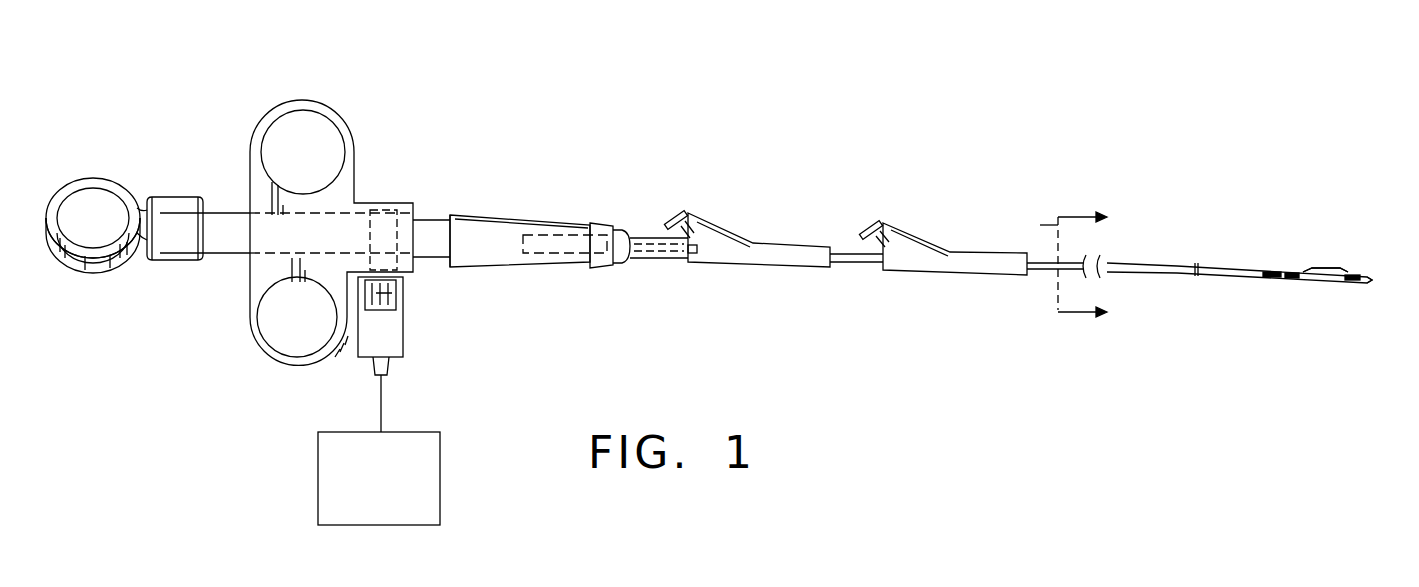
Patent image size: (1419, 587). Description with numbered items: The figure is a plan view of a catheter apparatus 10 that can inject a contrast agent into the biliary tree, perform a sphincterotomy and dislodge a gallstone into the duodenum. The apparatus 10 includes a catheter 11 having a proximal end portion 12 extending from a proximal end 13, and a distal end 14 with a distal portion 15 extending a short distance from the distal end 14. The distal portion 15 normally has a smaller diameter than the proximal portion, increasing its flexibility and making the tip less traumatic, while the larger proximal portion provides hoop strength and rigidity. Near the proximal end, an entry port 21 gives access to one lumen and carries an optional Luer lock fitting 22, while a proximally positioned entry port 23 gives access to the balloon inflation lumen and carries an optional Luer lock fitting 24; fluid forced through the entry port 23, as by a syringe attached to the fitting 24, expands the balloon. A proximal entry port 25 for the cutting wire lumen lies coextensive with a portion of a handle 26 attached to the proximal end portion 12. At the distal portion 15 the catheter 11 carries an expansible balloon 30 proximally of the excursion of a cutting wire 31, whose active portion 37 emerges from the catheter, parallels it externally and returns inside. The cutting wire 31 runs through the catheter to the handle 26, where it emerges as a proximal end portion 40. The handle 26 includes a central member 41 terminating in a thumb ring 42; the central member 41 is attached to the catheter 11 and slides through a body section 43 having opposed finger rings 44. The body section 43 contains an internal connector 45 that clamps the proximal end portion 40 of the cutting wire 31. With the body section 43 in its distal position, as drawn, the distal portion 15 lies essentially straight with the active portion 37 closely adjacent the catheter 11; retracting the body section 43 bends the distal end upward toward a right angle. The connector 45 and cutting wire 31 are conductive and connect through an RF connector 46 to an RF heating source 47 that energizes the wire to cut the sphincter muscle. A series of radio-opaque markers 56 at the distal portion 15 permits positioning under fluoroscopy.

The catheter apparatus 10 is at (962, 203).
The catheter 11 is at (1138, 262).
The proximal end portion 12 is at (627, 245).
The proximal end 13 is at (632, 85).
The distal end 14 is at (1372, 275).
The distal portion 15 is at (1367, 115).
The entry port 21 is at (922, 262).
The Leur lock fitting 22 is at (868, 225).
The entry port 23 is at (725, 255).
The Leur lock fitting 24 is at (672, 213).
The proximal entry port 25 is at (515, 235).
The handle 26 is at (210, 130).
The expansible balloon 30 is at (1272, 272).
The cutting wire 31 is at (478, 256).
The active portion 37 is at (1316, 270).
The proximal end portion 40 is at (430, 233).
The central member 41 is at (167, 250).
The thumb ring 42 is at (83, 265).
The body section 43 is at (352, 172).
The finger rings 44 is at (305, 122).
The internal connector 45 is at (418, 268).
The RF connector 46 is at (405, 343).
The RF heating source 47 is at (318, 462).
The radio-opaque markers 56 is at (1335, 282).